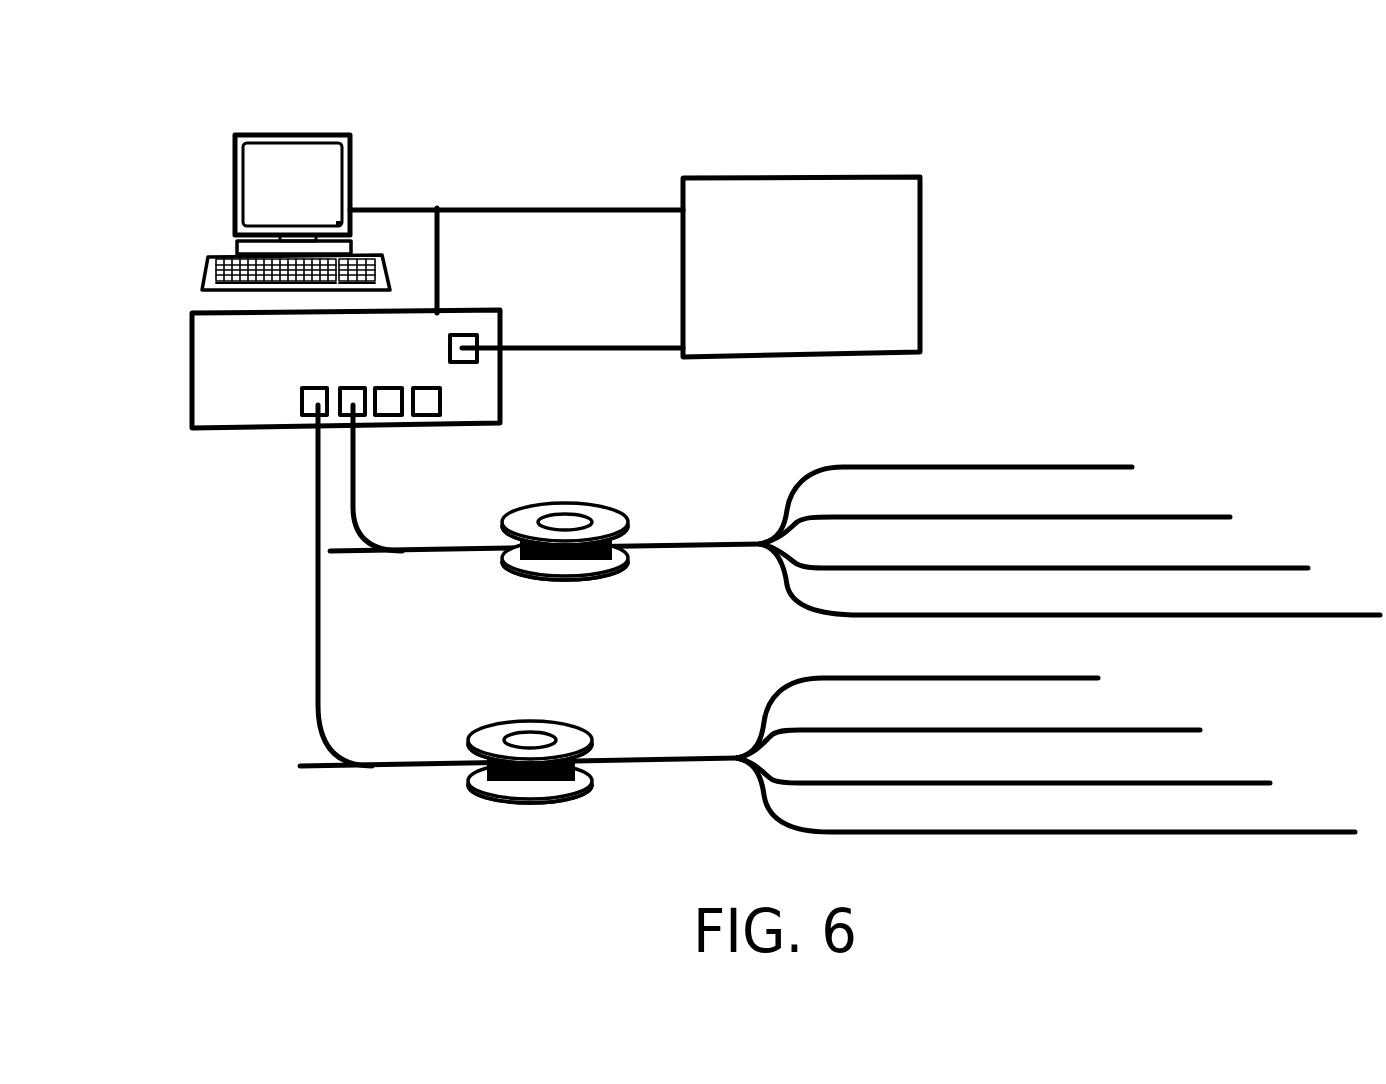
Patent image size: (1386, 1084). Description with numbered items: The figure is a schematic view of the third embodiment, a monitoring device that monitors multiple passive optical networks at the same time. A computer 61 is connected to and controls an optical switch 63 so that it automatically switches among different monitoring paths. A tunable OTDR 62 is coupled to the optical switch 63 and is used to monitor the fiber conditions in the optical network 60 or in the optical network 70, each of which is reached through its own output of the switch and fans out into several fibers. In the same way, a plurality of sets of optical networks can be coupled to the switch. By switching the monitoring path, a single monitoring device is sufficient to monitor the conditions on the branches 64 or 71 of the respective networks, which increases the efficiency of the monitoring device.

The optical network 60 is at (1195, 460).
The computer 61 is at (236, 147).
The tunable OTDR 62 is at (920, 197).
The optical switch 63 is at (265, 429).
The branch 64 is at (1060, 460).
The optical network 70 is at (1273, 696).
The branch 71 is at (1150, 721).